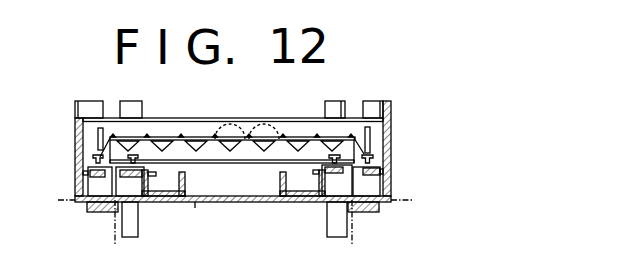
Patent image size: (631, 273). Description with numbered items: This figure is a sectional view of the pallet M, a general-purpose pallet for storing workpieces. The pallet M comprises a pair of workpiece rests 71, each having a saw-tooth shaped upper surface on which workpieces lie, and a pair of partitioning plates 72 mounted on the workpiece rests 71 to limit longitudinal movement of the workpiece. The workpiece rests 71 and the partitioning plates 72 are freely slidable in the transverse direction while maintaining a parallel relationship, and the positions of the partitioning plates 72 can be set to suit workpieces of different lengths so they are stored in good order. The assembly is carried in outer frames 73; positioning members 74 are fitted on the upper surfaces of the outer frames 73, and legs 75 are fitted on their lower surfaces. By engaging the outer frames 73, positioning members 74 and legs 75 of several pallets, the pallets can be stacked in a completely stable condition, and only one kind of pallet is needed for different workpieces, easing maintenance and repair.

The workpiece rest 71 is at (247, 147).
The partitioning plate 72 is at (193, 139).
The outer frame 73 is at (402, 124).
The positioning member 74 is at (139, 106).
The leg 75 is at (133, 210).
The pallet M is at (380, 101).